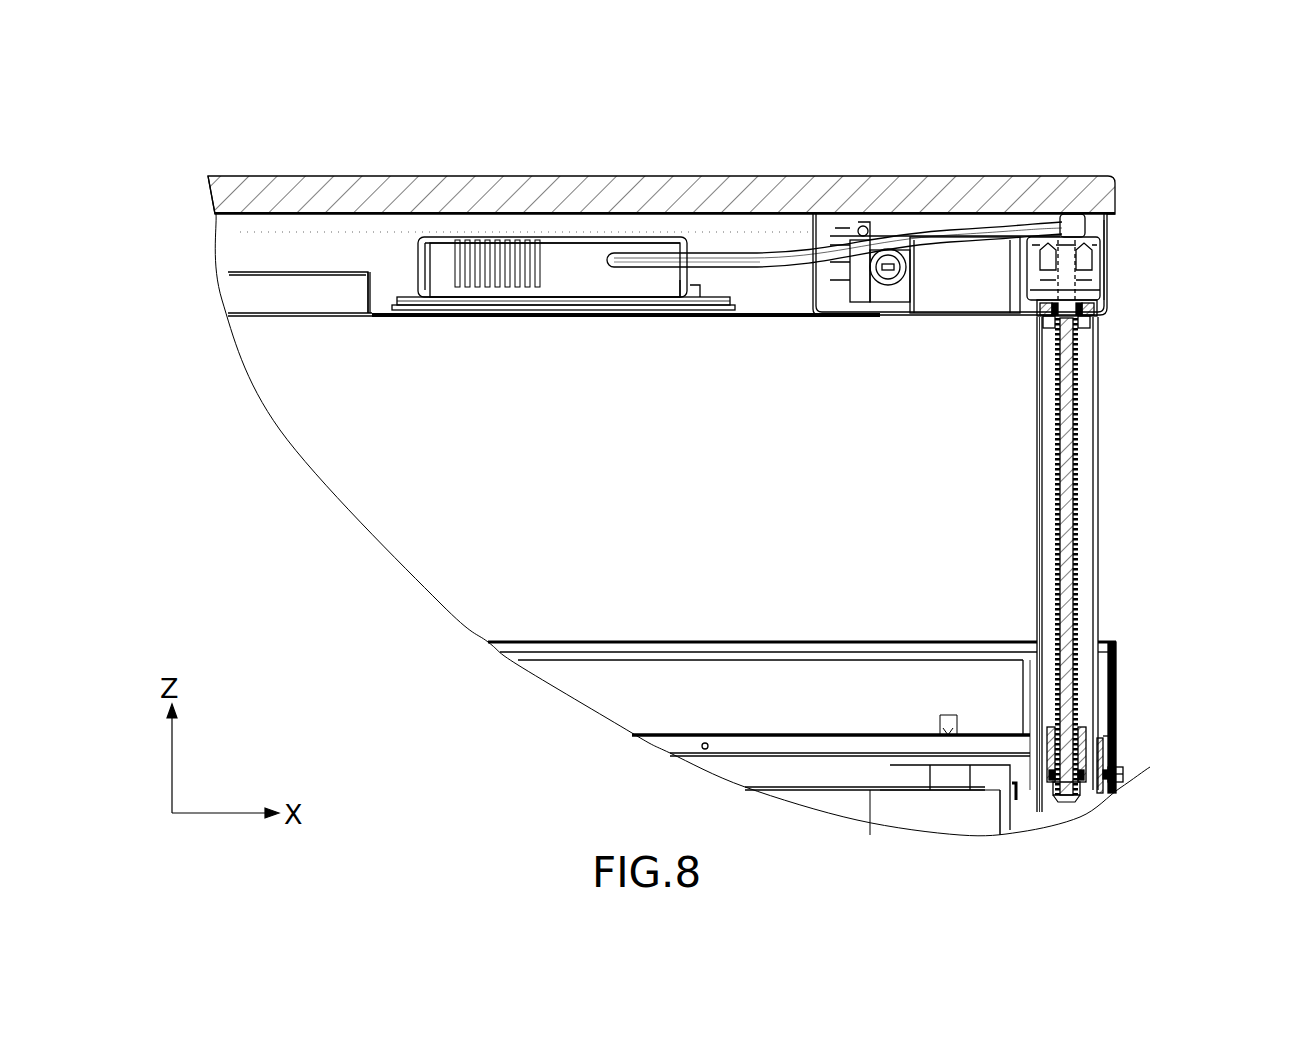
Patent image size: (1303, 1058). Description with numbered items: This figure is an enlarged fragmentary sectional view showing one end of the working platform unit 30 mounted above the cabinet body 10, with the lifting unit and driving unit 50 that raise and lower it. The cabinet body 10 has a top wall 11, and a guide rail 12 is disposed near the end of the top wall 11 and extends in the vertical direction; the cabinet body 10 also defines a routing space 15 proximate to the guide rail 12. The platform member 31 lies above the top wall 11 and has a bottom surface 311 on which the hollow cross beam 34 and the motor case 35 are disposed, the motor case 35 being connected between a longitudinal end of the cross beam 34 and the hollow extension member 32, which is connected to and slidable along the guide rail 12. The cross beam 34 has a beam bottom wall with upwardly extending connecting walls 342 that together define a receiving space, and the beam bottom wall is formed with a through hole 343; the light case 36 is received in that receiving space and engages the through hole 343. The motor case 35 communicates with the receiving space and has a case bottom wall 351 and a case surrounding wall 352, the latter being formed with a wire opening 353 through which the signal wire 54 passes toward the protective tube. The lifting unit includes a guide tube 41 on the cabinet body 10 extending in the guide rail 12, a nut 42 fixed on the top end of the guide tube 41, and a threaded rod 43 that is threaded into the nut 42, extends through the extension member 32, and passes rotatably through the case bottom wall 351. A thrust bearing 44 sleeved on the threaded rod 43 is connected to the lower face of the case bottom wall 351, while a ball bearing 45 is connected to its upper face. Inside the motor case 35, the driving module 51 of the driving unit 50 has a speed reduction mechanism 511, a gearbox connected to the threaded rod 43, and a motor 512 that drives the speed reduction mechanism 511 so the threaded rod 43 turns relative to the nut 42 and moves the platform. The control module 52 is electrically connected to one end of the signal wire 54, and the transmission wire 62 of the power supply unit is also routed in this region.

The cabinet body 10 is at (1128, 660).
The top wall 11 is at (730, 733).
The guide rail 12 is at (1110, 795).
The routing space 15 is at (1103, 745).
The working platform unit 30 is at (273, 168).
The platform member 31 is at (314, 190).
The bottom surface 311 is at (234, 195).
The extension member 32 is at (1097, 372).
The cross beam 34 is at (462, 318).
The connecting wall 342 is at (382, 232).
The through hole 343 is at (370, 318).
The motor case 35 is at (977, 317).
The case bottom wall 351 is at (960, 264).
The case surrounding wall 352 is at (1108, 247).
The wire opening 353 is at (1120, 216).
The light case 36 is at (288, 277).
The guide tube 41 is at (1075, 800).
The nut 42 is at (1080, 740).
The threaded rod 43 is at (1068, 443).
The thrust bearing 44 is at (1085, 320).
The ball bearing 45 is at (1105, 301).
The driving unit 50 is at (553, 222).
The driving module 51 is at (1085, 278).
The speed reduction mechanism 511 is at (1063, 257).
The motor 512 is at (937, 300).
The control module 52 is at (598, 248).
The signal wire 54 is at (735, 253).
The transmission wire 62 is at (773, 270).